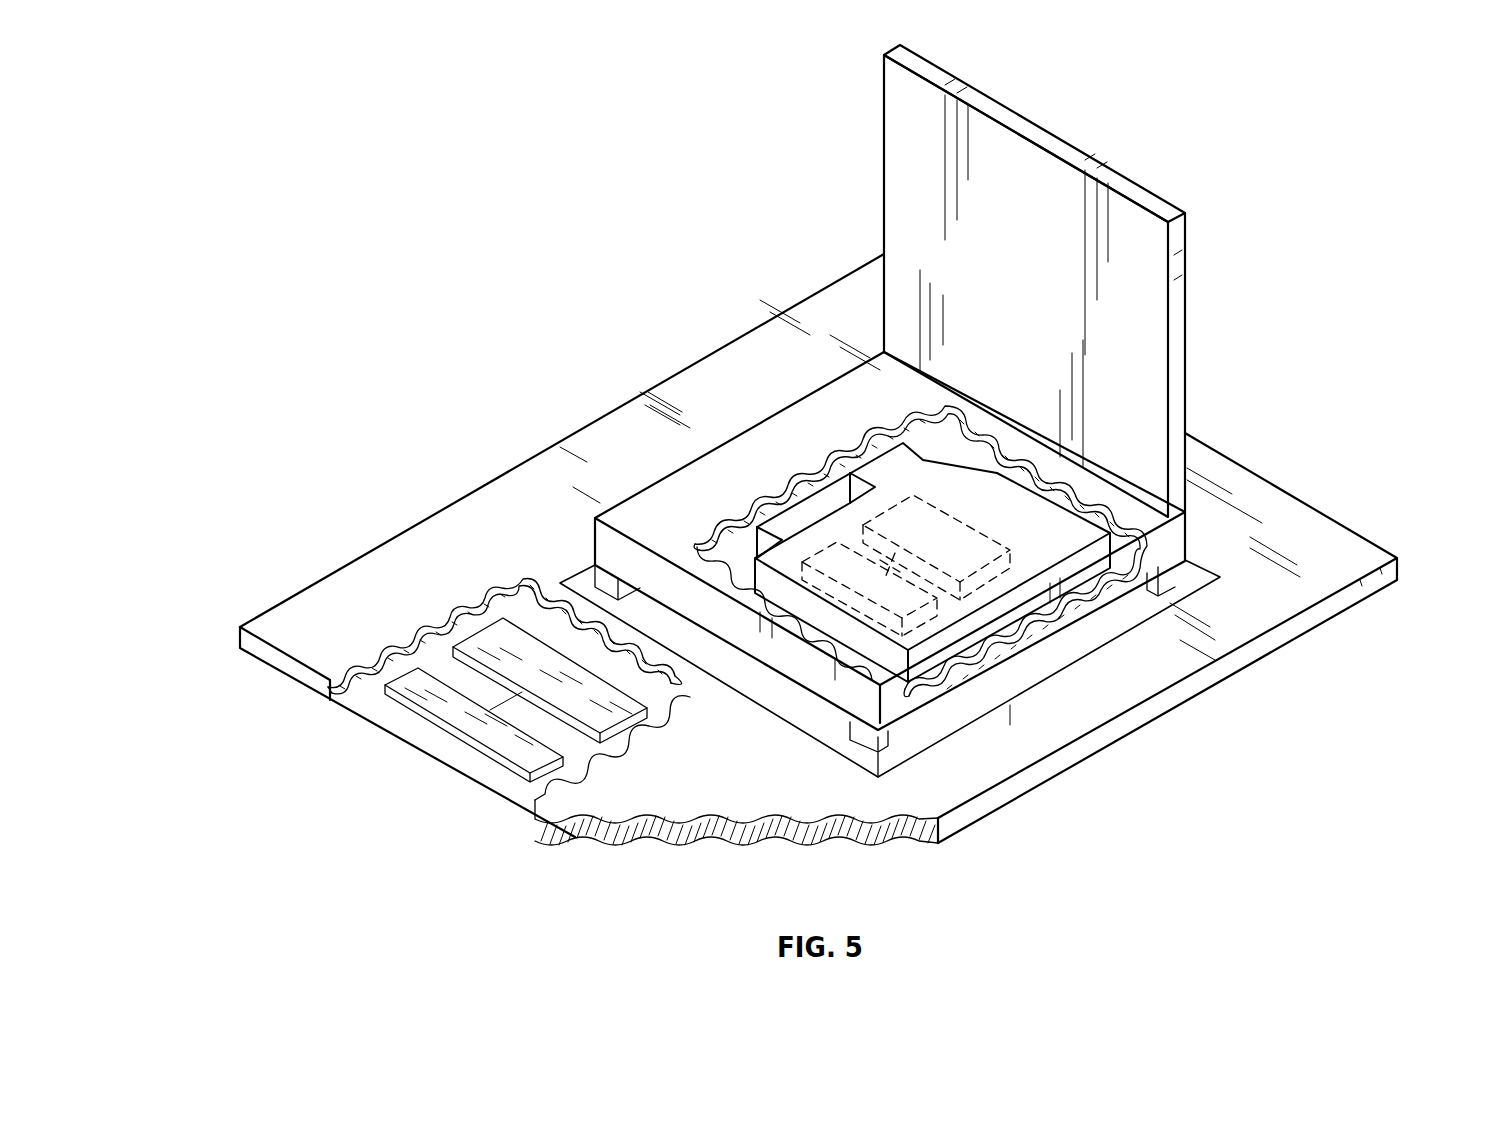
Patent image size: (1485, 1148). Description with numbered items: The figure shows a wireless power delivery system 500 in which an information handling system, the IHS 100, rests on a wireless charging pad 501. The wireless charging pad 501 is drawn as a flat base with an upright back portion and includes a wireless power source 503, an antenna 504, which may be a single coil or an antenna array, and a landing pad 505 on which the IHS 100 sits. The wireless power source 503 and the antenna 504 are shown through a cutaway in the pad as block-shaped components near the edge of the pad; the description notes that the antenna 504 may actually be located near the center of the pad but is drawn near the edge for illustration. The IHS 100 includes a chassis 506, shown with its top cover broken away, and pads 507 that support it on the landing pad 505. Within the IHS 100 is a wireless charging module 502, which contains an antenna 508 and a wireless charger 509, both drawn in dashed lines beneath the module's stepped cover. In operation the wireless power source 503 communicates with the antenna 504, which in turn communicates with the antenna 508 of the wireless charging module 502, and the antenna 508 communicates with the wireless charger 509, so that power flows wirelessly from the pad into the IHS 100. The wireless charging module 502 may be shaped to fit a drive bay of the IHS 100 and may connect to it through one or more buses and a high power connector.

The wireless power delivery system 500 is at (372, 94).
The IHS 100 is at (585, 550).
The wireless charging pad 501 is at (518, 458).
The wireless charging module 502 is at (955, 458).
The wireless power source 503 is at (468, 643).
The antenna 504 is at (393, 683).
The landing pad 505 is at (1285, 512).
The chassis 506 is at (1030, 638).
The pads 507 is at (862, 742).
The antenna 508 is at (807, 547).
The wireless charger 509 is at (887, 503).